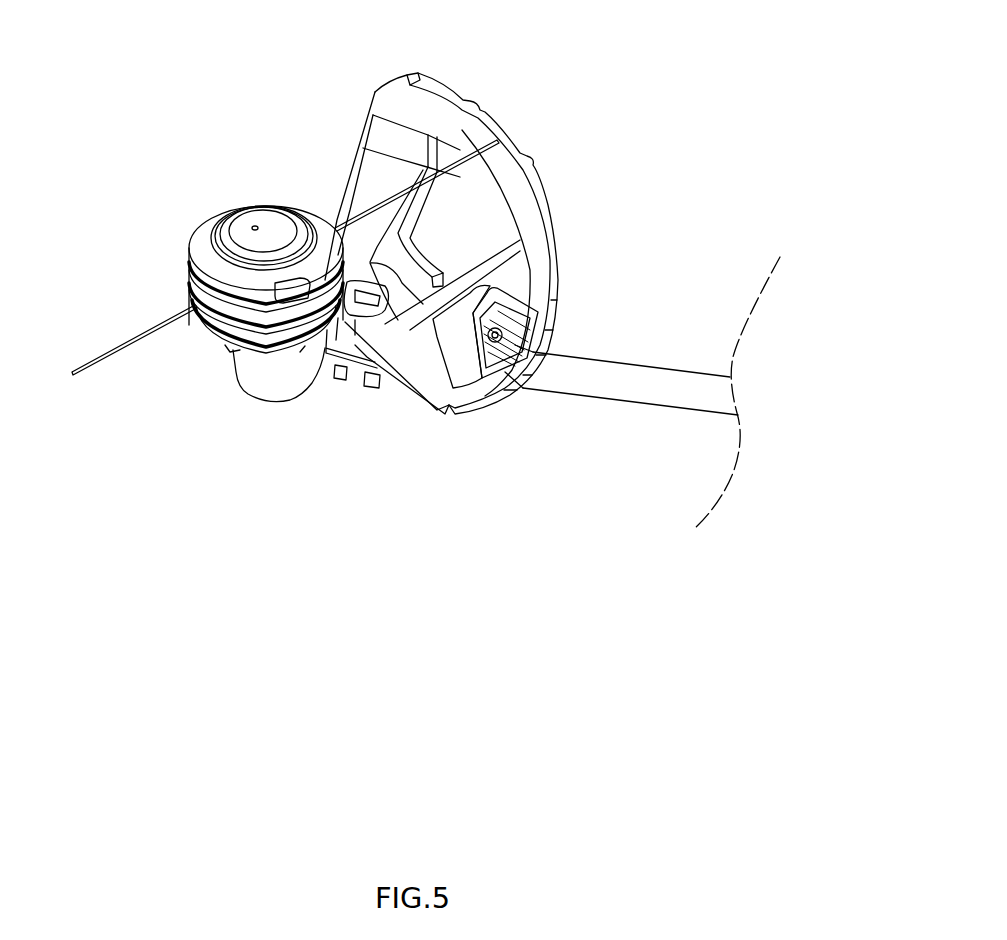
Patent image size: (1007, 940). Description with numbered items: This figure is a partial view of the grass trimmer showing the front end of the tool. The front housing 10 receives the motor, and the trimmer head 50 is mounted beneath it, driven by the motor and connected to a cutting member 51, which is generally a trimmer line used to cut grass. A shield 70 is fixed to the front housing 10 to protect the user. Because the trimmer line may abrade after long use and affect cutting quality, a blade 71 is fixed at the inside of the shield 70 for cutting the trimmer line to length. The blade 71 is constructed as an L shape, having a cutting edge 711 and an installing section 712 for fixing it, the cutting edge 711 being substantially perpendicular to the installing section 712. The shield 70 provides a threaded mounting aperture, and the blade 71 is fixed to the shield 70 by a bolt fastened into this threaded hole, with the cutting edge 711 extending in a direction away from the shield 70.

The front housing 10 is at (275, 407).
The trimmer head 50 is at (207, 230).
The cutting member 51 is at (140, 338).
The shield 70 is at (455, 91).
The blade 71 is at (658, 340).
The cutting edge 711 is at (547, 312).
The installing section 712 is at (546, 320).